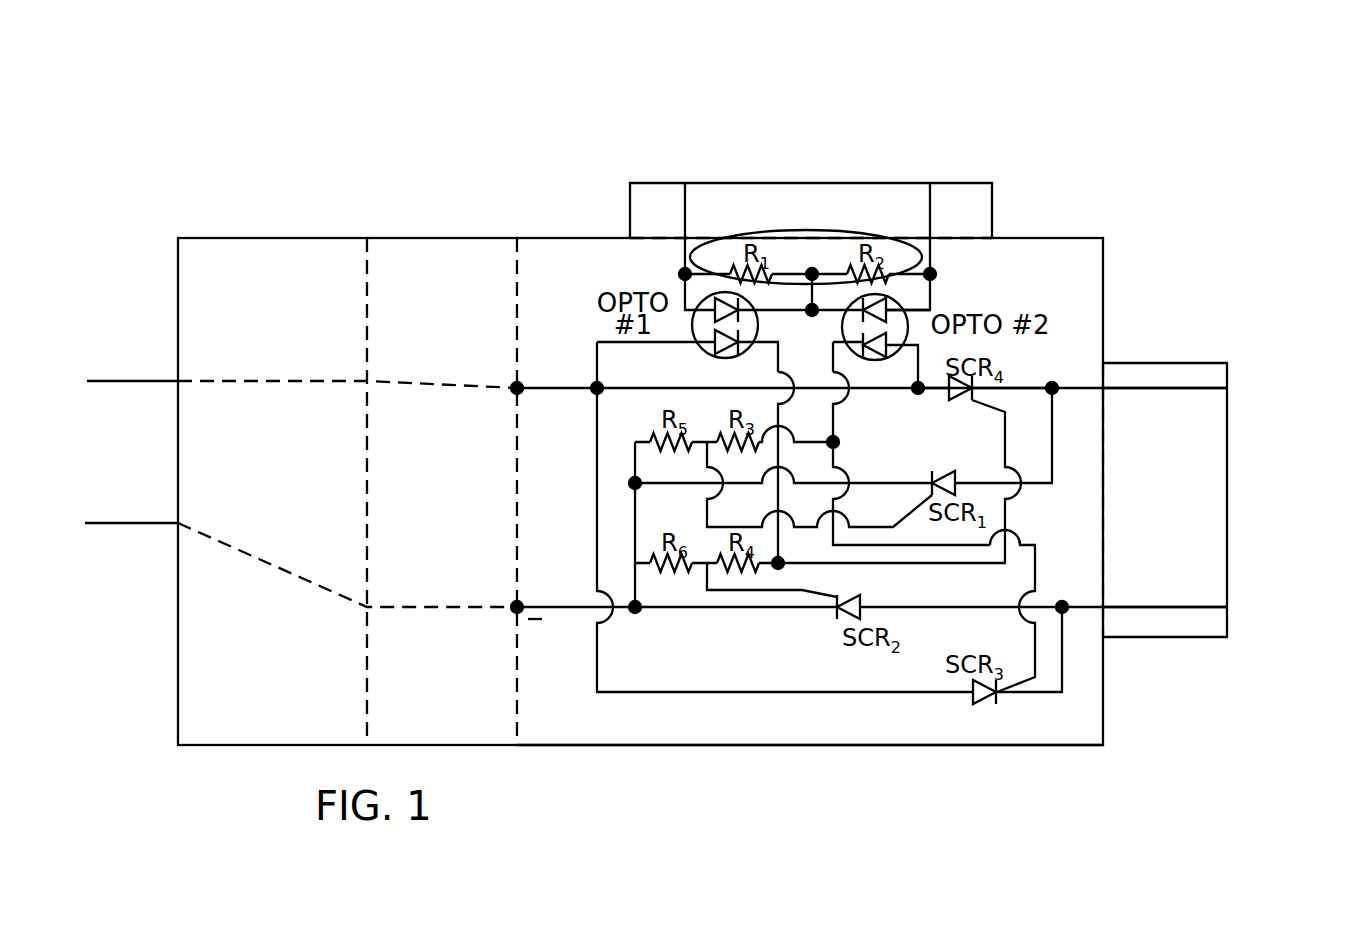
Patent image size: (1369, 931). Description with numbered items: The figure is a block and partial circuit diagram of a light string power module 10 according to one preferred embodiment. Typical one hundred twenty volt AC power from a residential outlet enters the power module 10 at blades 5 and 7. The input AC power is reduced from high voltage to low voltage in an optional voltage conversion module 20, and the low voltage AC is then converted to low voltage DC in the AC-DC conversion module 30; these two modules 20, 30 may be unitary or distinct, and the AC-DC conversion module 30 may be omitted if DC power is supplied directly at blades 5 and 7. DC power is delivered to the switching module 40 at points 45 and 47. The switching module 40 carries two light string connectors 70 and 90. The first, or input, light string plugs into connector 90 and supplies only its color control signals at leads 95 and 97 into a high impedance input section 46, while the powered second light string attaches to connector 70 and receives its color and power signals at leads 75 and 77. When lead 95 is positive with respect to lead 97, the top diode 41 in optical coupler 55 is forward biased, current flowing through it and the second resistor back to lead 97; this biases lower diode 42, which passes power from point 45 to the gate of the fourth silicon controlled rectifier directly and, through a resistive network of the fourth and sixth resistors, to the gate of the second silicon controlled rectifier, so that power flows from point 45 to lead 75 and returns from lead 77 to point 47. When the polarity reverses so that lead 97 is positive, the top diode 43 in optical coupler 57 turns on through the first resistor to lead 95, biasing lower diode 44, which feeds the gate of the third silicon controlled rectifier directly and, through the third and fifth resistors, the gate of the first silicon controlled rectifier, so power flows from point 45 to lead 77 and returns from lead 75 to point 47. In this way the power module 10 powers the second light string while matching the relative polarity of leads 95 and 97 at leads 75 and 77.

The power module 10 is at (192, 92).
The voltage conversion module 20 is at (222, 255).
The AC-DC conversion module 30 is at (436, 255).
The switching module 40 is at (1102, 755).
The blade 5 is at (127, 381).
The blade 7 is at (142, 525).
The point 45 is at (520, 384).
The point 47 is at (520, 604).
The light string connector 90 is at (658, 74).
The lead 95 is at (685, 183).
The lead 97 is at (930, 183).
The top diode 41 is at (712, 292).
The lower diode 42 is at (718, 343).
The optical coupler 55 is at (766, 326).
The high impedance input section 46 is at (880, 300).
The top diode 43 is at (870, 344).
The lower diode 44 is at (918, 310).
The optical coupler 57 is at (920, 345).
The light string connector 70 is at (1275, 362).
The lead 75 is at (1228, 388).
The lead 77 is at (1228, 609).